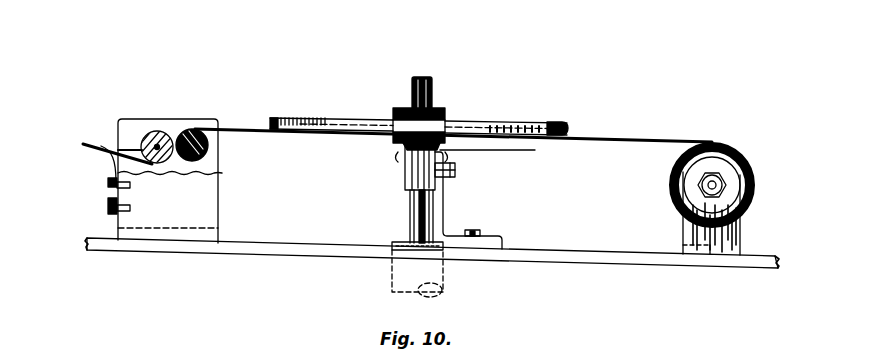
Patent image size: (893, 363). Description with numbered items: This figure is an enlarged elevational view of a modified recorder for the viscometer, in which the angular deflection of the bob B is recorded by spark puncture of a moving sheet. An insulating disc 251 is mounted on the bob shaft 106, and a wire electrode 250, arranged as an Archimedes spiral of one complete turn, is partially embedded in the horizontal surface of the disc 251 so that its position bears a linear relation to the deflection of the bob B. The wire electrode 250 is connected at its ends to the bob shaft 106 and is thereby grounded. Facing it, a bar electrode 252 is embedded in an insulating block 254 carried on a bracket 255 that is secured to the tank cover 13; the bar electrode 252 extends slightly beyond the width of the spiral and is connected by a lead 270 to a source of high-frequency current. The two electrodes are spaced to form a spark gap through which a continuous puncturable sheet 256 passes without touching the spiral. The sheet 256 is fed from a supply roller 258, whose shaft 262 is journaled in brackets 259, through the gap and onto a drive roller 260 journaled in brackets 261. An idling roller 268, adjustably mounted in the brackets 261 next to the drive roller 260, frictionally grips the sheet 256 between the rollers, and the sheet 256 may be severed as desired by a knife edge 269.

The cover member 13 is at (245, 247).
The bob shaft 106 is at (430, 85).
The wire electrode 250 is at (445, 118).
The insulating disc 251 is at (553, 122).
The bar electrode 252 is at (417, 147).
The insulating block 254 is at (410, 188).
The bracket 255 is at (443, 205).
The puncturable sheet medium 256 is at (632, 138).
The supply roller 258 is at (747, 162).
The brackets 259 is at (687, 229).
The drive roller 260 is at (195, 128).
The brackets 261 is at (215, 198).
The shaft 262 is at (725, 187).
The idling roller 268 is at (157, 132).
The knife edge 269 is at (110, 160).
The lead 270 is at (498, 152).
The bob B is at (442, 280).